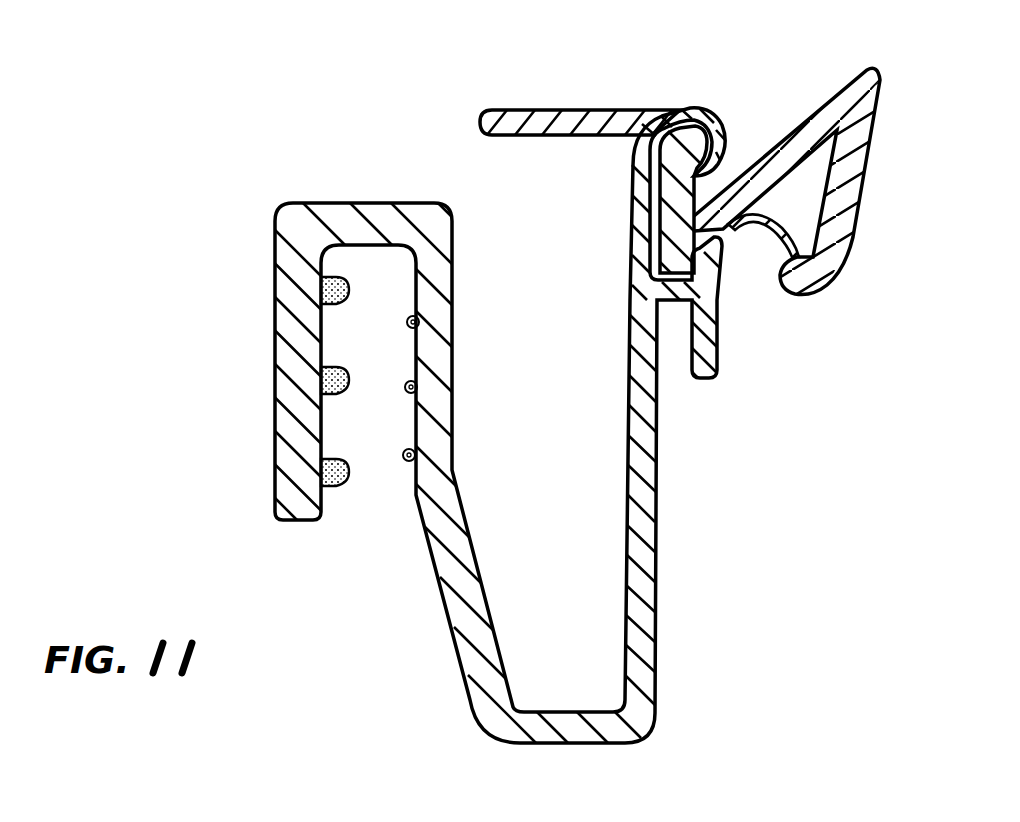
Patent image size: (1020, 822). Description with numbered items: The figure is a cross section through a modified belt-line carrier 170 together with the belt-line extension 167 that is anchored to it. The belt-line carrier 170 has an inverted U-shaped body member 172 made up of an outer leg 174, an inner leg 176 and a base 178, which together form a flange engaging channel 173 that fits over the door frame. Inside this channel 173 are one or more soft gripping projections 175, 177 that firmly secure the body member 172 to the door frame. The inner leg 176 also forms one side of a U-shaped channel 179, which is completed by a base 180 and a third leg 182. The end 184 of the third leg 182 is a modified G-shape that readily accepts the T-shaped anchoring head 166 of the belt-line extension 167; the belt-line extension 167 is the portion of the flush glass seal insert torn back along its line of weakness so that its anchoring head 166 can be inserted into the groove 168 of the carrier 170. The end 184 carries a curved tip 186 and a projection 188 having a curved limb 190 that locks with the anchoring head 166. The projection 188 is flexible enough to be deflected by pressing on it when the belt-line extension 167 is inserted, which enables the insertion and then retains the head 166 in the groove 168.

The T-shaped anchoring head 166 is at (720, 185).
The belt-line extension 167 is at (770, 149).
The groove 168 is at (708, 240).
The belt-line carrier 170 is at (682, 568).
The inverted U-shaped body member 172 is at (252, 444).
The flange engaging channel 173 is at (368, 492).
The outer leg 174 is at (275, 278).
The soft gripping projection 175 is at (338, 390).
The inner leg 176 is at (455, 337).
The soft gripping projection 177 is at (406, 327).
The base 178 is at (385, 203).
The U-shaped channel 179 is at (478, 228).
The base 180 is at (596, 740).
The third leg 182 is at (657, 512).
The end 184 is at (632, 220).
The curved tip 186 is at (682, 127).
The projection 188 is at (734, 356).
The curved limb 190 is at (720, 272).